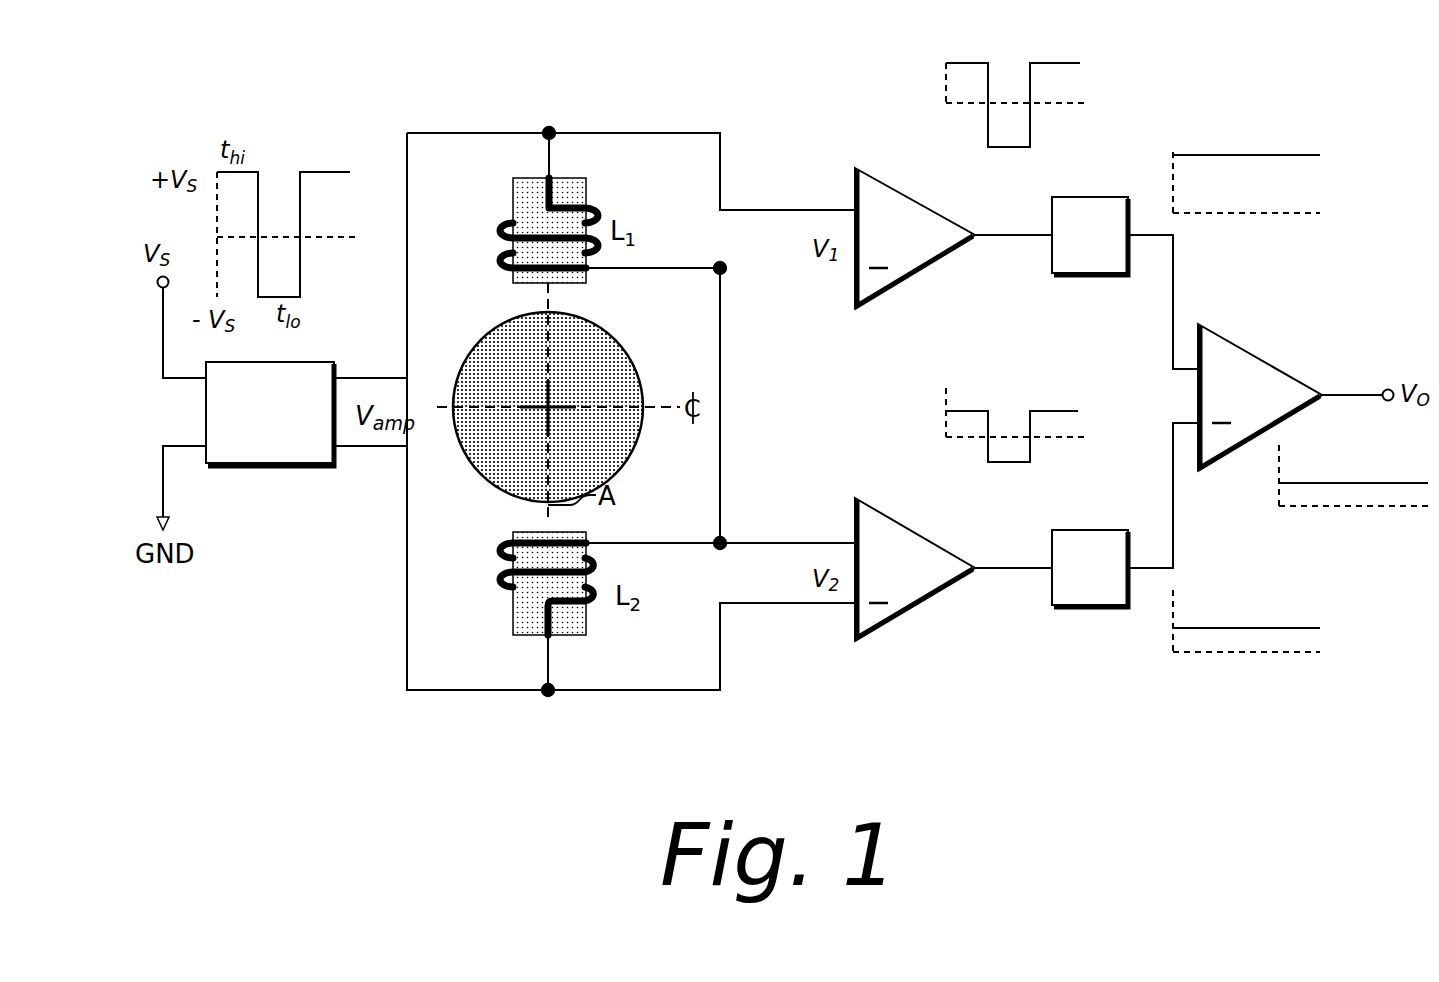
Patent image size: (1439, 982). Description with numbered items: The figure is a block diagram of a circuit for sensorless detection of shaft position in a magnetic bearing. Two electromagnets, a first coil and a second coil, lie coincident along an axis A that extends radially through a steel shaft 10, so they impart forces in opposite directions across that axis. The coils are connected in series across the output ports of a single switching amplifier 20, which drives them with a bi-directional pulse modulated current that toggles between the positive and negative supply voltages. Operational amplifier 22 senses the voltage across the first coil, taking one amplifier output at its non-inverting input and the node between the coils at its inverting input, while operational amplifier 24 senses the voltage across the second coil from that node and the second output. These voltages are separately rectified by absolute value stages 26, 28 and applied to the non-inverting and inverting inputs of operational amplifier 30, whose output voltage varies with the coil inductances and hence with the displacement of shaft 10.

The steel shaft 10 is at (630, 338).
The switching amplifier 20 is at (255, 466).
The operational amplifier 22 is at (858, 165).
The operational amplifier 24 is at (865, 640).
The absolute value stage 26 is at (1120, 196).
The absolute value stage 28 is at (1095, 608).
The operational amplifier 30 is at (1255, 348).